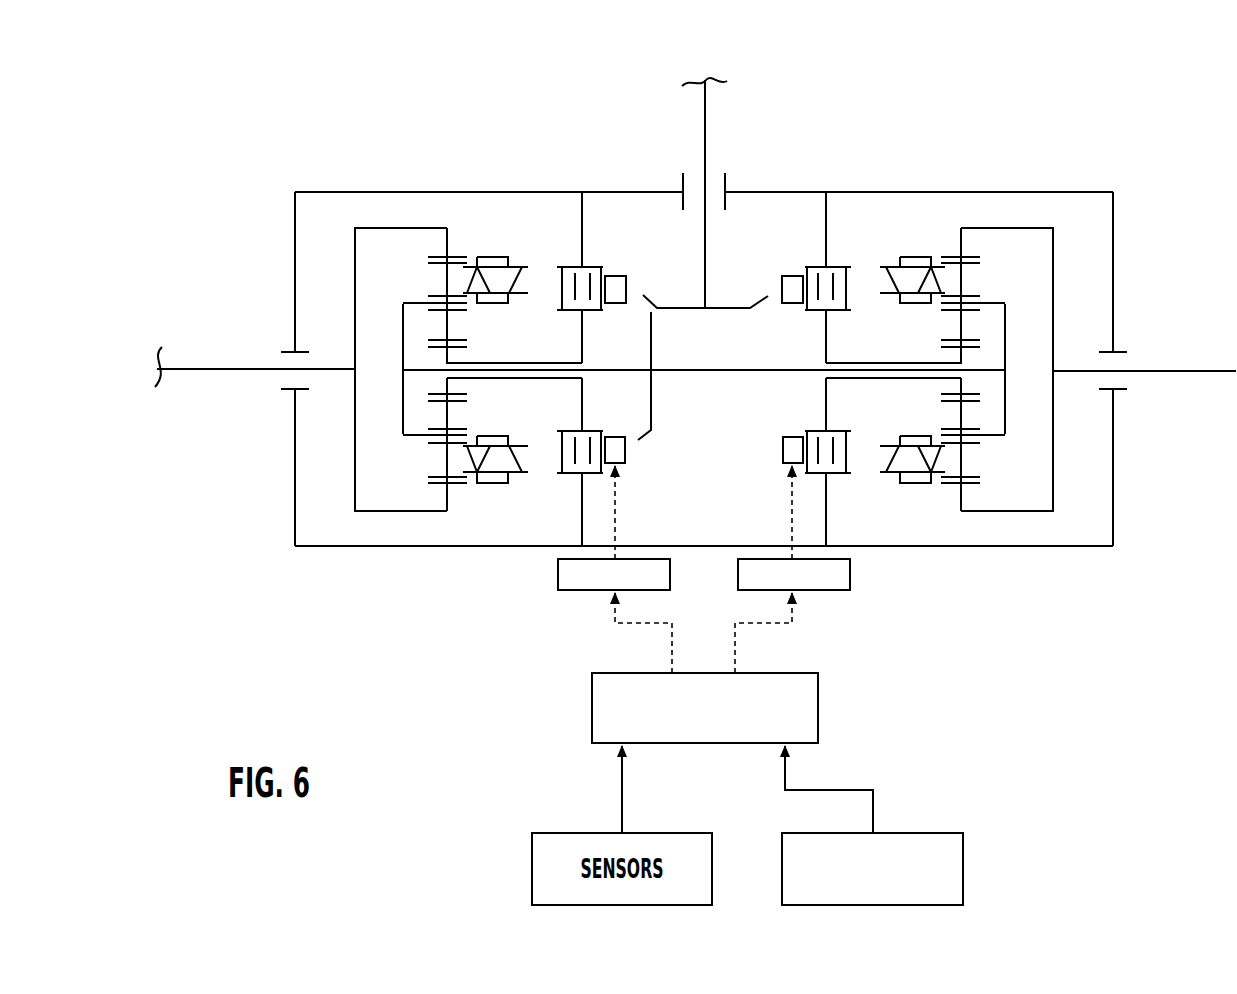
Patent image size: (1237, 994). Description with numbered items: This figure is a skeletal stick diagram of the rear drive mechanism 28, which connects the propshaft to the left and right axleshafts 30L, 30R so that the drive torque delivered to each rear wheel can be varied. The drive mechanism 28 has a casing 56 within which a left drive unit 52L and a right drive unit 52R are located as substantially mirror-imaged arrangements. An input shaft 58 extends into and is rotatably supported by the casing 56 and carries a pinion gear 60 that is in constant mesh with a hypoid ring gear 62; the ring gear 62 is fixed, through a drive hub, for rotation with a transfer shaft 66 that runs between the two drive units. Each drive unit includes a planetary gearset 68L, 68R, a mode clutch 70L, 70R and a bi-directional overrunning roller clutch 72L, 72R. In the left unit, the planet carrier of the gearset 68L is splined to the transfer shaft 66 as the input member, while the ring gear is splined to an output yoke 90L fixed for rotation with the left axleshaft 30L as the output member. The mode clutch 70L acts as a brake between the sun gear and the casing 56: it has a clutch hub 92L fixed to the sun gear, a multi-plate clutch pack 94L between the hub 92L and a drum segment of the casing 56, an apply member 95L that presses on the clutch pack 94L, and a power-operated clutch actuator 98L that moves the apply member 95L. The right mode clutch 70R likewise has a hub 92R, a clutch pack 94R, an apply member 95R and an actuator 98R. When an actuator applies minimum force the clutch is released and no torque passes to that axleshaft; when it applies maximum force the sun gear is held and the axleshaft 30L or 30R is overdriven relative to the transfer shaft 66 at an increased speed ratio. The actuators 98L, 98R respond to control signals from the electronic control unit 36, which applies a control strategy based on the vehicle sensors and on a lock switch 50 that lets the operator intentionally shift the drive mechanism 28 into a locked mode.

The drive mechanism 28 is at (948, 96).
The left axleshaft 30L is at (220, 370).
The right axleshaft 30R is at (1173, 372).
The electronic control unit 36 is at (592, 705).
The lock switch 50 is at (960, 855).
The left drive unit 52L is at (446, 531).
The right drive unit 52R is at (949, 523).
The casing 56 is at (1068, 193).
The input shaft 58 is at (705, 112).
The pinion gear 60 is at (767, 300).
The hypoid ring gear 62 is at (652, 340).
The transfer shaft 66 is at (728, 372).
The planetary gearset 68L is at (463, 236).
The planetary gearset 68R is at (951, 231).
The mode clutch 70L is at (788, 271).
The second mode clutch 70R is at (848, 484).
The bi-directional overrunning roller clutch 72L is at (492, 491).
The second bi-directional roller clutch 72R is at (921, 488).
The output yoke 90L is at (559, 198).
The clutch hub 92L is at (582, 330).
The hub 92R is at (826, 330).
The multi-plate clutch pack 94L is at (565, 444).
The multi-plate clutch pack 94R is at (840, 444).
The apply member 95L is at (615, 448).
The apply member 95R is at (781, 448).
The power-operated clutch actuator 98L is at (580, 590).
The power-operated clutch actuator 98R is at (838, 590).